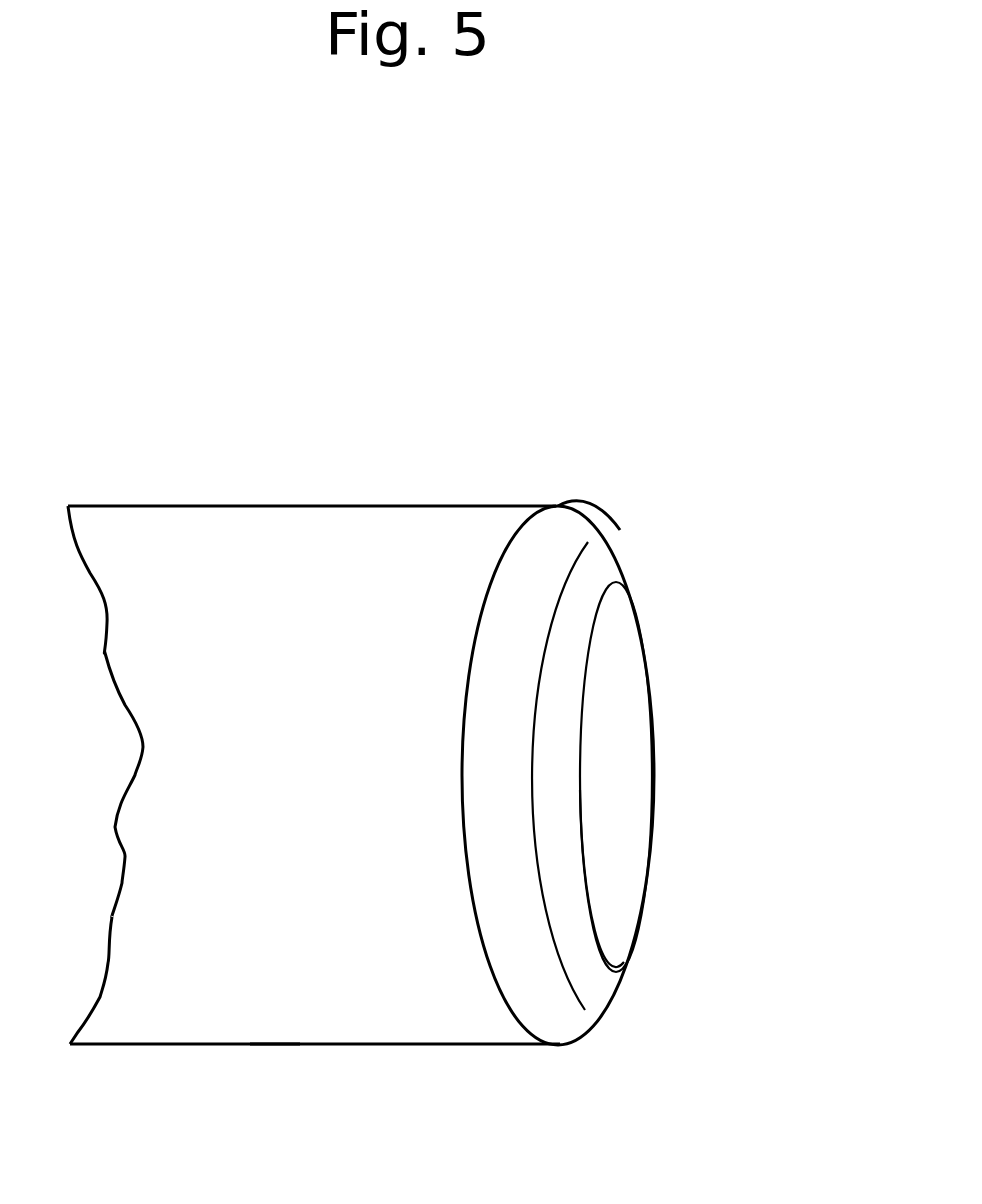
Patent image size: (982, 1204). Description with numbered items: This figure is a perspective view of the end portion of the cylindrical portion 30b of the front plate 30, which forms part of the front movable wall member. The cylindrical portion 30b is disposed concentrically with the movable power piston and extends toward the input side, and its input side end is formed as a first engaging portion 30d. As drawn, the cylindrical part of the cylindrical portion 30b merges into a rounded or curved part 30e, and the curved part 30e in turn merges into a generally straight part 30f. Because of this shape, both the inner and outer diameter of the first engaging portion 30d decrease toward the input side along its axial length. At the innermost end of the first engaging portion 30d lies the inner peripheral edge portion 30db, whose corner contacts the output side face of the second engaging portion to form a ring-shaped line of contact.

The front plate 30 is at (162, 505).
The cylindrical portion 30b is at (248, 1044).
The curved part 30e is at (560, 524).
The first engaging portion 30d is at (603, 536).
The generally straight part 30f is at (623, 569).
The inner peripheral edge portion 30db is at (597, 937).